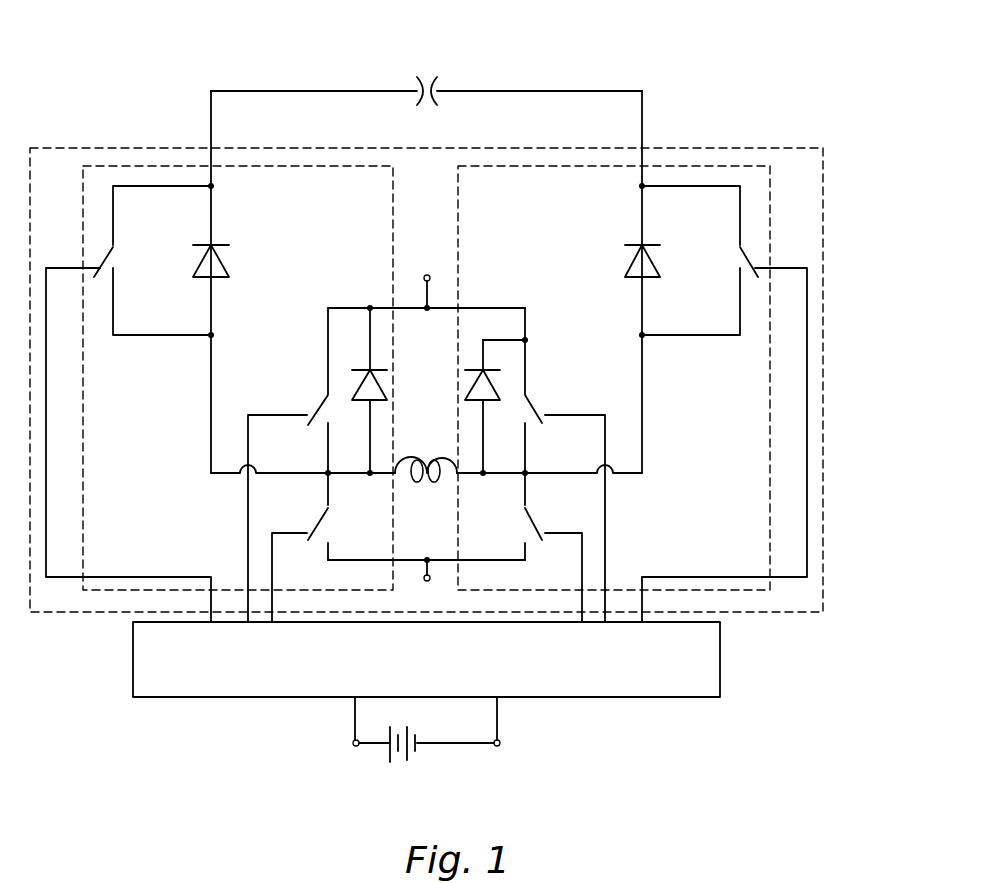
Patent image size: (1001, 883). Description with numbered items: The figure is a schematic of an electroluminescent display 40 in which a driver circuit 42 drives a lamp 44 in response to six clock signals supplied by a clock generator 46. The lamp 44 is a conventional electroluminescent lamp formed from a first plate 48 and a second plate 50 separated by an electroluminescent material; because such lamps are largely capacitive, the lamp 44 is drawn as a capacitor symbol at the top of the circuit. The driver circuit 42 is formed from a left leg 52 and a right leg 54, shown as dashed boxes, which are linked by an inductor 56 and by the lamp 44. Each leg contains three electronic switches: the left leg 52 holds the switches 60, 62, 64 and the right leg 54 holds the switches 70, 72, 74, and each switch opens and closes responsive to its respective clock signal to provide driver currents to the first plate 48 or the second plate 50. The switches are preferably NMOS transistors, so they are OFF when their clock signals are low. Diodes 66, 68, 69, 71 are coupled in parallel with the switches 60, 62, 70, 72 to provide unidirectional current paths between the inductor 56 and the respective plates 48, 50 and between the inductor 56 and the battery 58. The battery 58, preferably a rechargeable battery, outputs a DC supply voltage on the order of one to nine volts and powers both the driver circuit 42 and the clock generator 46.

The electroluminescent display 40 is at (841, 163).
The driver circuit 42 is at (140, 147).
The lamp 44 is at (429, 67).
The clock generator 46 is at (133, 677).
The first plate 48 is at (418, 82).
The second plate 50 is at (432, 82).
The left leg 52 is at (110, 164).
The right leg 54 is at (743, 167).
The inductor 56 is at (416, 484).
The battery 58 is at (390, 762).
The electronic switch 60 is at (110, 247).
The electronic switch 62 is at (320, 400).
The electronic switch 64 is at (320, 513).
The diode 66 is at (223, 262).
The diode 68 is at (627, 262).
The diode 69 is at (378, 378).
The electronic switch 70 is at (748, 253).
The diode 71 is at (467, 397).
The electronic switch 72 is at (533, 400).
The electronic switch 74 is at (532, 512).